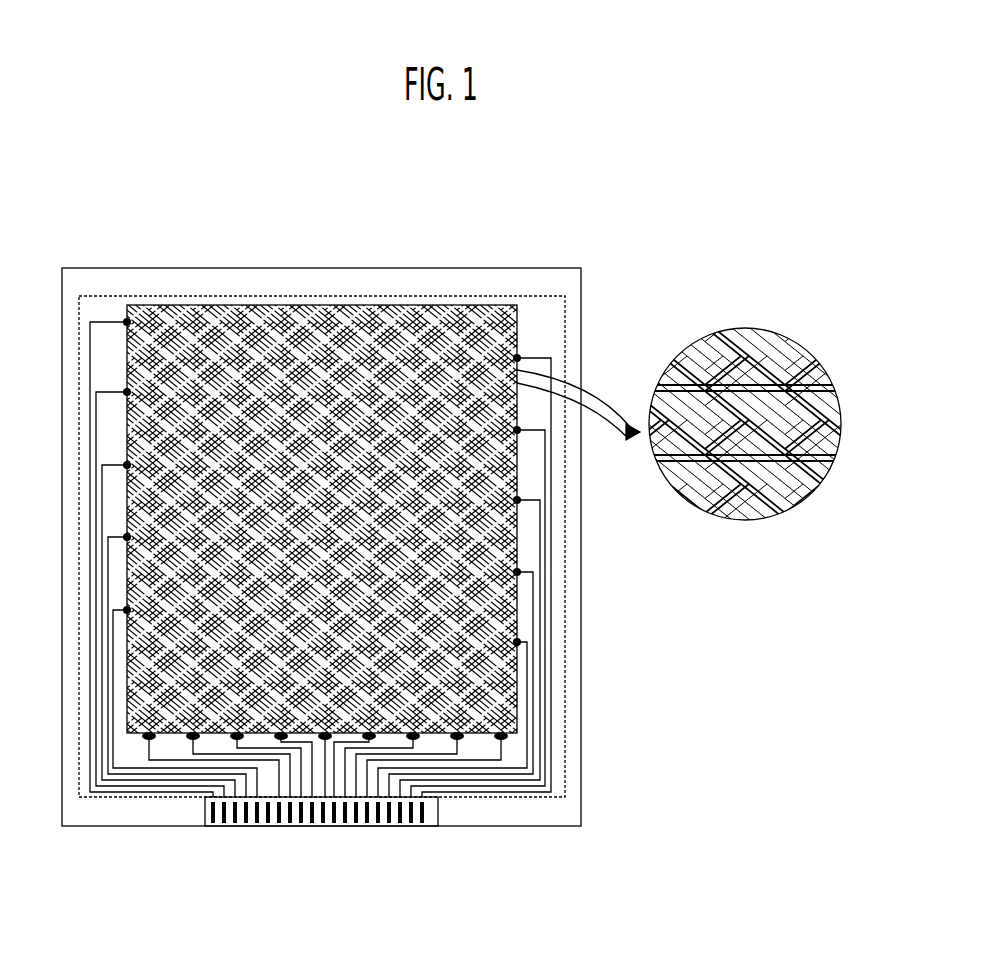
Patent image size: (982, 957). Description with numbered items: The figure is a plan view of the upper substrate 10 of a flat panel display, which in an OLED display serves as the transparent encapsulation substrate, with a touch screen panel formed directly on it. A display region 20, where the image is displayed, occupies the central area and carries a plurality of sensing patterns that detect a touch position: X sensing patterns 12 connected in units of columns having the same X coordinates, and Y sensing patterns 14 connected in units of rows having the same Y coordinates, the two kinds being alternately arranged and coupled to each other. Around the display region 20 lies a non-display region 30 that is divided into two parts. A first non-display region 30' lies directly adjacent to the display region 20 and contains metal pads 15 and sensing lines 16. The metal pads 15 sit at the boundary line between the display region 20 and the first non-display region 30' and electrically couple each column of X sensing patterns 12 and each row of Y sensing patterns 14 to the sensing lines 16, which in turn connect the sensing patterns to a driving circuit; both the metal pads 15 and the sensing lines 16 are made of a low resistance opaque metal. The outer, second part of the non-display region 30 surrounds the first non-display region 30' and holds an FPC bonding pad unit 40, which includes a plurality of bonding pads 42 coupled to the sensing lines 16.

The upper substrate 10 is at (170, 251).
The X sensing patterns 12 is at (721, 345).
The Y sensing patterns 14 is at (786, 352).
The metal pads 15 is at (517, 350).
The sensing lines 16 is at (539, 355).
The display region 20 is at (265, 302).
The non-display region 30 is at (386, 580).
The first non-display region 30' is at (371, 559).
The FPC bonding pad unit 40 is at (438, 813).
The bonding pads 42 is at (427, 827).